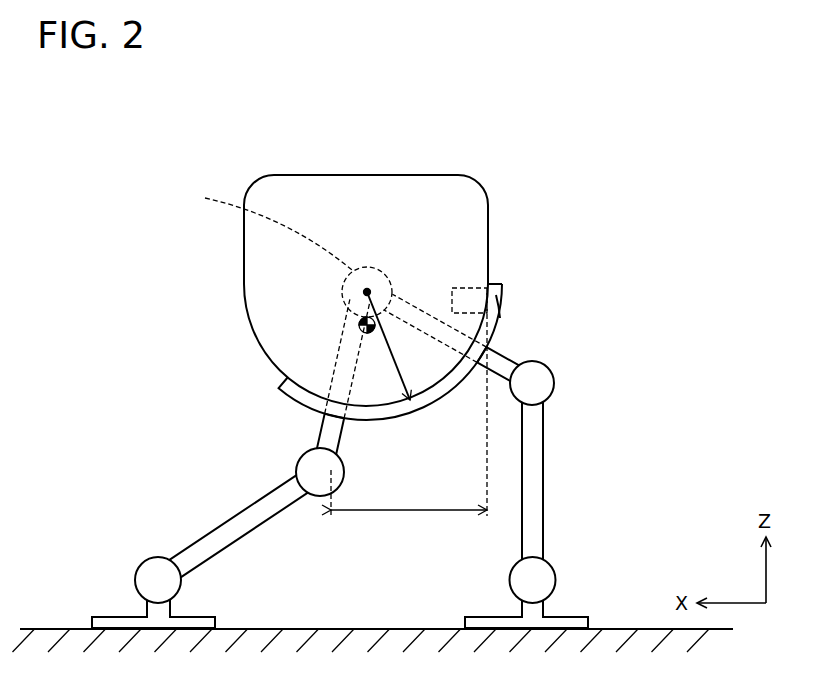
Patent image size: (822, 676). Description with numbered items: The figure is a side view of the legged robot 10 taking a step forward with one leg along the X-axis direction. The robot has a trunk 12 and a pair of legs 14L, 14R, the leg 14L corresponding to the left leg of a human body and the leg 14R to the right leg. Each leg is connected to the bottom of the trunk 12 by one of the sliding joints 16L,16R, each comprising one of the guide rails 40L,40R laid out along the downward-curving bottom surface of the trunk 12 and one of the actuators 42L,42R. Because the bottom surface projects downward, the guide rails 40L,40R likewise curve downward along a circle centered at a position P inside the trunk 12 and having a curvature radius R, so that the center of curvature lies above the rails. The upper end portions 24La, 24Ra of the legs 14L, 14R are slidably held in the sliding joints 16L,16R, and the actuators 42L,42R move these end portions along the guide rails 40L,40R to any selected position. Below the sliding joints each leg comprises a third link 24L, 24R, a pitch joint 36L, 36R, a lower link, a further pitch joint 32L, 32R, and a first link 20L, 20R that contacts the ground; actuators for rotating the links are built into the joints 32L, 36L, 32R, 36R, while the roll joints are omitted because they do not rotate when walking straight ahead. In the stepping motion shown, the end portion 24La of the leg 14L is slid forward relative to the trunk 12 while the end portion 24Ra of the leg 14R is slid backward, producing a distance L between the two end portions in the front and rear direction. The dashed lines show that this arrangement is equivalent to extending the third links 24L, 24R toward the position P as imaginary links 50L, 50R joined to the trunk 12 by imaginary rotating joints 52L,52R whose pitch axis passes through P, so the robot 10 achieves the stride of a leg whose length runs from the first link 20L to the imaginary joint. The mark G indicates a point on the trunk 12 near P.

The legged robot 10 is at (388, 112).
The trunk 12 is at (278, 188).
The leg 14L is at (193, 507).
The leg 14R is at (562, 474).
The sliding joints 16L,16R is at (504, 286).
The left first link 20L is at (108, 617).
The first link 20R is at (572, 617).
The left third link 24L is at (318, 443).
The end portion 24La is at (318, 412).
The third link 24R is at (513, 356).
The end portion 24Ra is at (492, 343).
The joint 32L is at (140, 570).
The joint 32R is at (553, 570).
The left second pitch joint 36L is at (296, 472).
The joint 36R is at (557, 388).
The guide rails 40L,40R is at (500, 318).
The actuators 42L,42R is at (468, 283).
The imaginary link 50L is at (338, 350).
The imaginary link 50R is at (410, 300).
The imaginary rotating joints 52L,52R is at (235, 221).
The position P is at (362, 290).
The center of gravity G is at (357, 320).
The curvature radius R is at (389, 346).
The distance L is at (409, 413).